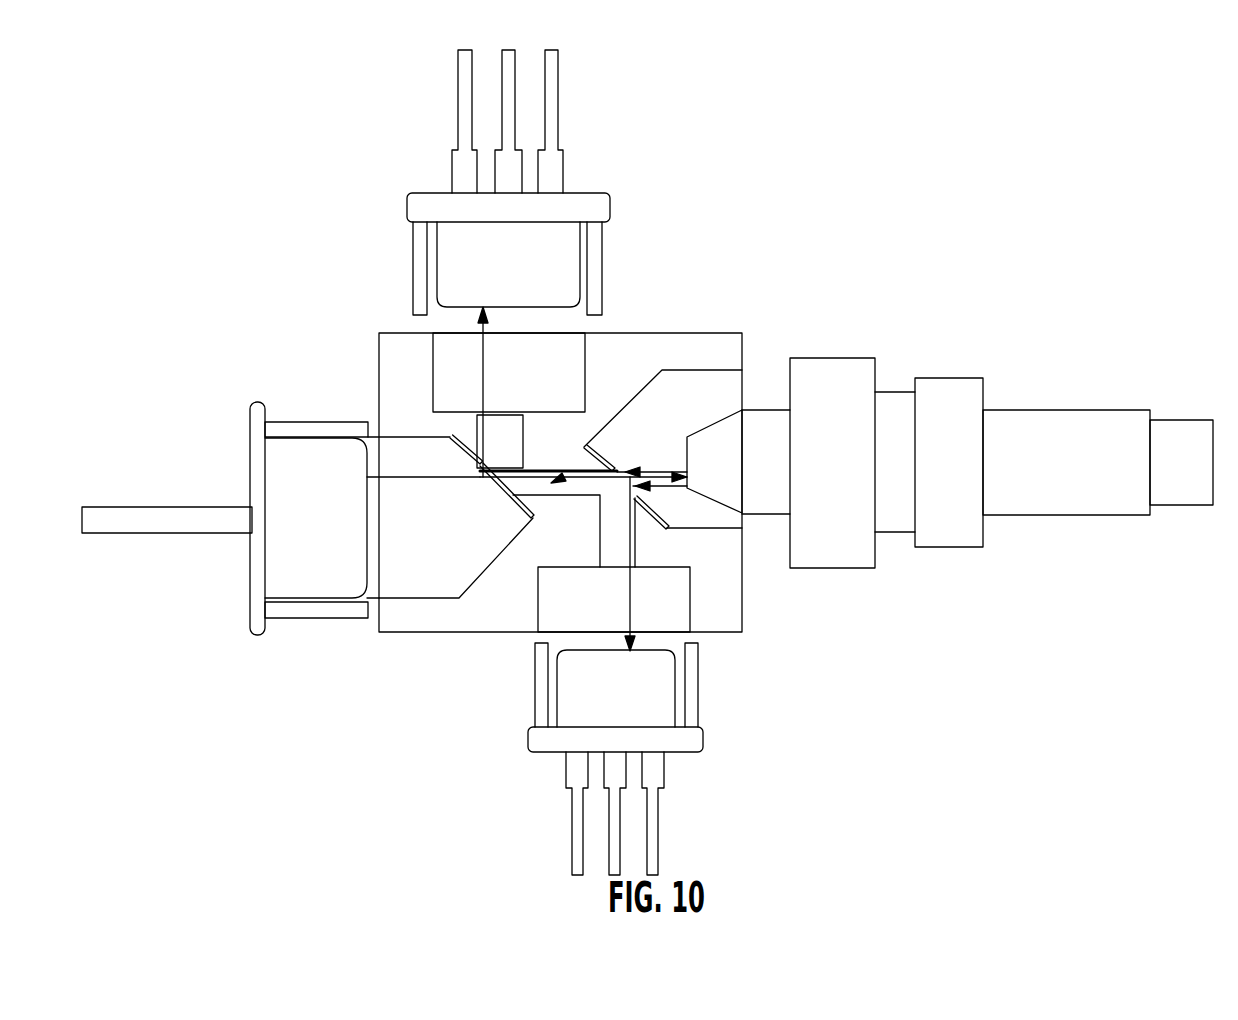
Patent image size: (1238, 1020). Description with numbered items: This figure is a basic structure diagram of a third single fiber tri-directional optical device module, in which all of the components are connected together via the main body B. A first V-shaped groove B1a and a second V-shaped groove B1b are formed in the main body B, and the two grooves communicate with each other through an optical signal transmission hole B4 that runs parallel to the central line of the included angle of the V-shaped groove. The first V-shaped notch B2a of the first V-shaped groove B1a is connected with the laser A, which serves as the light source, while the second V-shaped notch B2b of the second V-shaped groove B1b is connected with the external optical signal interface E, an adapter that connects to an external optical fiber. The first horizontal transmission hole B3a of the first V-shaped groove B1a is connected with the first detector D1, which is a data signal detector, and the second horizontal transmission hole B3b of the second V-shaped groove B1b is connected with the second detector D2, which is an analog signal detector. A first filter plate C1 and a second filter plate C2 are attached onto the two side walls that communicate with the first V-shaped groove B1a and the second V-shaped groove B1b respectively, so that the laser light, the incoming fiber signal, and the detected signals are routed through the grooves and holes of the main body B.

The laser A is at (322, 467).
The main body B is at (507, 617).
The first V-shaped groove B1a is at (460, 592).
The second V-shaped groove B1b is at (633, 393).
The first V-shaped notch B2a is at (400, 597).
The second V-shaped notch B2b is at (691, 370).
The first horizontal transmission hole B3a is at (489, 448).
The second horizontal transmission hole B3b is at (618, 547).
The optical signal transmission hole B4 is at (548, 466).
The first filter plate C1 is at (477, 465).
The second filter plate C2 is at (615, 467).
The first detector D1 is at (463, 228).
The second detector D2 is at (603, 702).
The external optical signal interface E is at (952, 507).